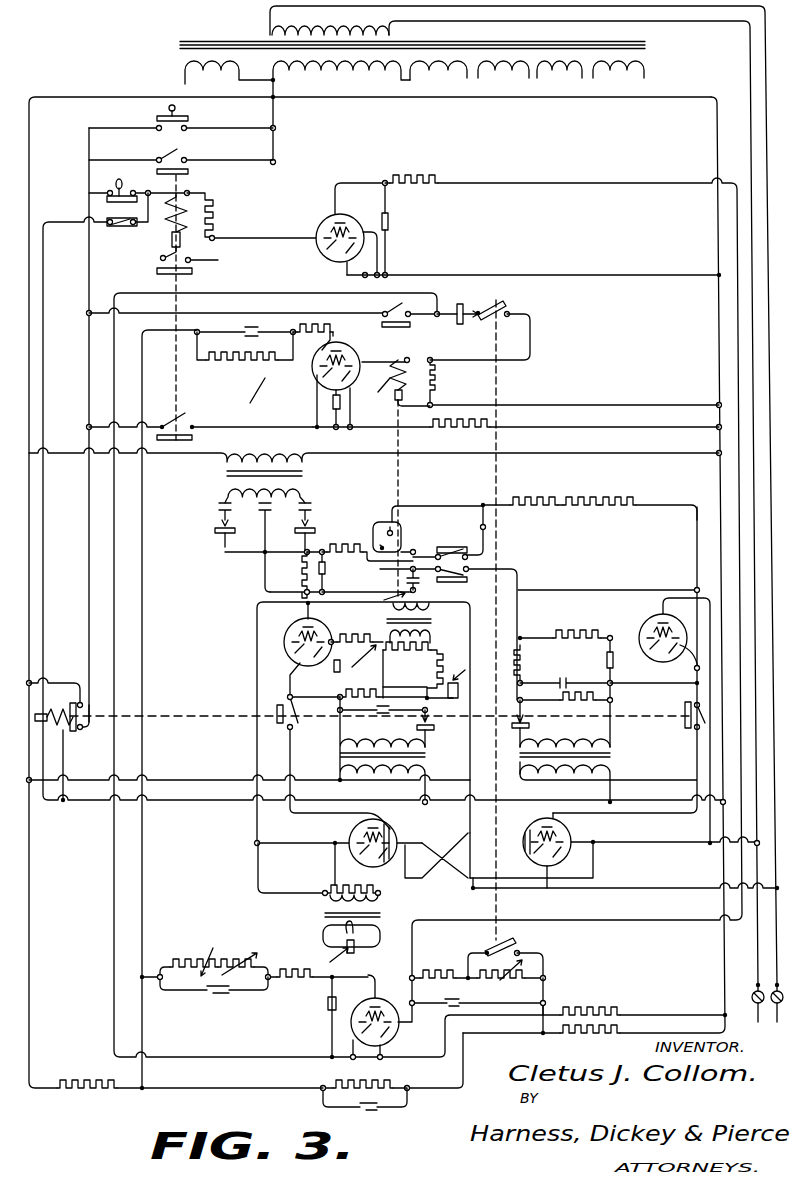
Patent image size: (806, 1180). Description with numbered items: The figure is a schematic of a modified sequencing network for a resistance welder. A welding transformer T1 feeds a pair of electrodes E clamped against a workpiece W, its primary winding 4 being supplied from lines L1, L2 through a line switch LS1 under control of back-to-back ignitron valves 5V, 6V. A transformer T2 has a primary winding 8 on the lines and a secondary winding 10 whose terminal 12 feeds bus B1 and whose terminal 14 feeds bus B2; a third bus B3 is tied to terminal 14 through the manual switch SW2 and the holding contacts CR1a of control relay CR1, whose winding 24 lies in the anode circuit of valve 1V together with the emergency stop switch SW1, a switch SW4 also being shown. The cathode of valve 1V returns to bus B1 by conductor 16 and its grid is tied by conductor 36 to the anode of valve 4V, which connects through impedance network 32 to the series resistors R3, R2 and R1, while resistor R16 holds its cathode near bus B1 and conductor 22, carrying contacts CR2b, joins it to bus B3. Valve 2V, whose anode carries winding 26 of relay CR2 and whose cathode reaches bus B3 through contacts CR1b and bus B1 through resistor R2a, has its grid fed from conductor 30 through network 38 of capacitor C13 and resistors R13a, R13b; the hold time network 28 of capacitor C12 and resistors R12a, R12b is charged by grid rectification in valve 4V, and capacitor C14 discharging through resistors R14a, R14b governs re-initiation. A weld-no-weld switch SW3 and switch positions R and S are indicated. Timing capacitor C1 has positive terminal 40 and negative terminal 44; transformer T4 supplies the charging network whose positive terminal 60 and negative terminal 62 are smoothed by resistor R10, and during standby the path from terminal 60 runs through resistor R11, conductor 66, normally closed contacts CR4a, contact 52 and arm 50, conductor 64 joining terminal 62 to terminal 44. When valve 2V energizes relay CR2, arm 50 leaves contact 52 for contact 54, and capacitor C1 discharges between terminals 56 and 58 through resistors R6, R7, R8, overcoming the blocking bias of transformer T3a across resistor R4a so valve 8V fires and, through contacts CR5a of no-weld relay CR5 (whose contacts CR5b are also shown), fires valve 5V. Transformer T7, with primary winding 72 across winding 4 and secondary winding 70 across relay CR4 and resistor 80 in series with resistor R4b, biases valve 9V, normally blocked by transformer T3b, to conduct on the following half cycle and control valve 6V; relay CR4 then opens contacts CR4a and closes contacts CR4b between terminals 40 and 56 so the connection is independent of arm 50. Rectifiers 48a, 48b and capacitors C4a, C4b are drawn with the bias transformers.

The primary winding 8 is at (268, 29).
The transformer T2 is at (180, 45).
The secondary winding 10 is at (330, 79).
The terminal 12 is at (398, 83).
The second terminal 14 is at (280, 100).
The manually operable switch SW2 is at (201, 121).
The bus B2 is at (29, 142).
The normally open contacts CR1a is at (170, 159).
The bus B1 is at (717, 131).
The third bus B3 is at (89, 272).
The emergency stop switch SW1 is at (114, 186).
The switch SW4 is at (133, 229).
The energizing winding 24 is at (164, 233).
The control relay CR1 is at (208, 196).
The valve 1V is at (326, 224).
The conductor 36 is at (584, 183).
The conductor 16 is at (538, 275).
The conductor 22 is at (232, 317).
The contacts CR2b is at (384, 314).
The control relay CR2 is at (408, 357).
The switch position (run) R is at (505, 623).
The switch position (stop) S is at (512, 642).
The weld-no-weld switch SW3 is at (497, 378).
The energizing winding 26 is at (396, 384).
The valve 2V is at (347, 345).
The capacitor C13 is at (242, 337).
The conductor 30 is at (142, 385).
The resistor R13b is at (236, 363).
The adjustable resistor R13a is at (294, 354).
The impedance network 38 is at (251, 399).
The contacts CR1b is at (186, 418).
The resistor R2a is at (482, 435).
The transformer T4 is at (222, 482).
The positive terminal 60 is at (305, 524).
The resistor R10 is at (296, 575).
The charging current limiting resistor R11 is at (327, 572).
The conductor 66 is at (362, 548).
The switch arm 50 is at (416, 543).
The second contact 54 is at (390, 526).
The contact 52 is at (382, 547).
The common connection 56 is at (480, 507).
The normally closed contacts CR4a is at (465, 557).
The secondary winding 70 is at (466, 567).
The normally open contacts CR4b is at (466, 576).
The positive terminal 40 is at (388, 563).
The conductor 64 is at (332, 590).
The capacitor C1 is at (405, 582).
The negative terminal 44 is at (395, 600).
The negative terminal 62 is at (300, 605).
The valve 9V is at (330, 636).
The primary winding 72 is at (357, 649).
The transformer T7 is at (427, 610).
The resistor 80 is at (424, 671).
The resistor R4b is at (383, 688).
The capacitor C4b is at (378, 718).
The rectifier 48b is at (430, 729).
The transformer T3b is at (427, 756).
The relay contacts CR5b is at (333, 762).
The no-weld control relay CR5 is at (162, 720).
The contacts CR5a is at (686, 712).
The common connection 58 is at (696, 591).
The resistor R6 is at (522, 505).
The variable resistor R7 is at (566, 507).
The resistor R8 is at (604, 507).
The relay CR4 is at (454, 628).
The resistor R4a is at (566, 646).
The capacitor C4a is at (567, 680).
The rectifier 48a is at (538, 727).
The transformer T3a is at (612, 757).
The valve 8V is at (656, 628).
The electric valve 6V is at (391, 834).
The electric valve 5V is at (558, 838).
The electrical line L1 is at (757, 819).
The electrical line L2 is at (750, 867).
The line switch LS1 is at (748, 998).
The welding transformer T1 is at (320, 915).
The primary winding 4 is at (380, 897).
The workpiece W is at (366, 938).
The welding electrodes E is at (333, 960).
The valve 4V is at (380, 999).
The resistor R12b is at (178, 946).
The resistor R12a is at (293, 955).
The impedance network 28 is at (214, 953).
The capacitor C12 is at (224, 993).
The resistor R14b is at (432, 975).
The resistor R14a is at (536, 963).
The impedance network 32 is at (552, 985).
The capacitor C14 is at (466, 1003).
The resistor R16 is at (600, 1015).
The resistor R3 is at (591, 1047).
The resistor R2 is at (382, 1085).
The resistor R1 is at (83, 1096).